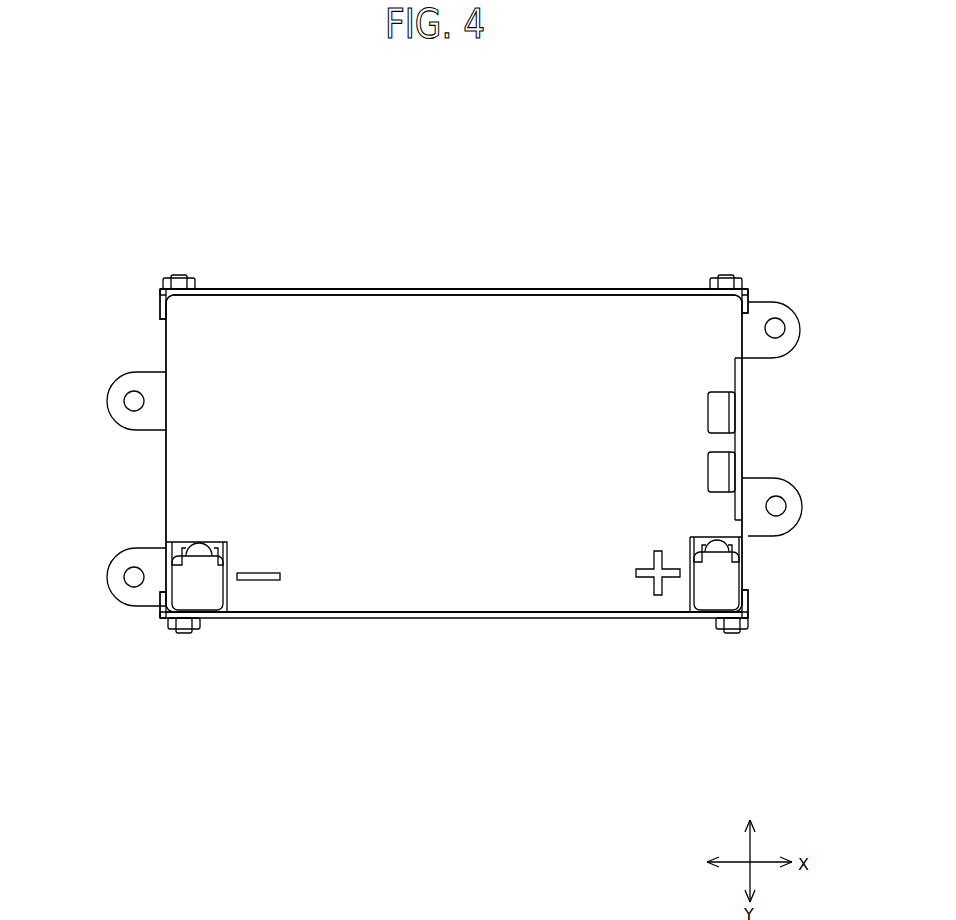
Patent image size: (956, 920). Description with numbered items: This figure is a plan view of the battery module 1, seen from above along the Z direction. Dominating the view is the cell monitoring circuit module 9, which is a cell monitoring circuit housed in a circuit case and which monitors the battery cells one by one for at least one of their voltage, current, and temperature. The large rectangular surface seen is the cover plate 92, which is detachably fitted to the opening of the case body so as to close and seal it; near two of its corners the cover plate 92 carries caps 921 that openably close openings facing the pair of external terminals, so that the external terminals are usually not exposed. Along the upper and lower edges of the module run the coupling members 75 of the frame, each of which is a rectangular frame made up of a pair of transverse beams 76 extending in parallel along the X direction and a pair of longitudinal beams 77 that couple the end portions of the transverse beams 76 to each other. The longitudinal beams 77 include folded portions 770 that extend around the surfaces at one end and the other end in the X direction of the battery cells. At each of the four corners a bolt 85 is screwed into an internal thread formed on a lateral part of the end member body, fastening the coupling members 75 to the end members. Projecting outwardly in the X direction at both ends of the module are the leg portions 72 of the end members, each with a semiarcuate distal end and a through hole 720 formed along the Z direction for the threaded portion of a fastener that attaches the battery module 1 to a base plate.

The battery module 1 is at (722, 155).
The cell monitoring circuit module 9 is at (578, 265).
The coupling member 75 is at (448, 282).
The transverse beam 76 is at (360, 289).
The longitudinal beam 77 is at (205, 289).
The folded portion 770 is at (160, 305).
The bolt 85 is at (178, 274).
The leg portion 72 is at (130, 372).
The through hole 720 is at (134, 401).
The cover plate 92 is at (537, 330).
The cap 921 is at (192, 580).